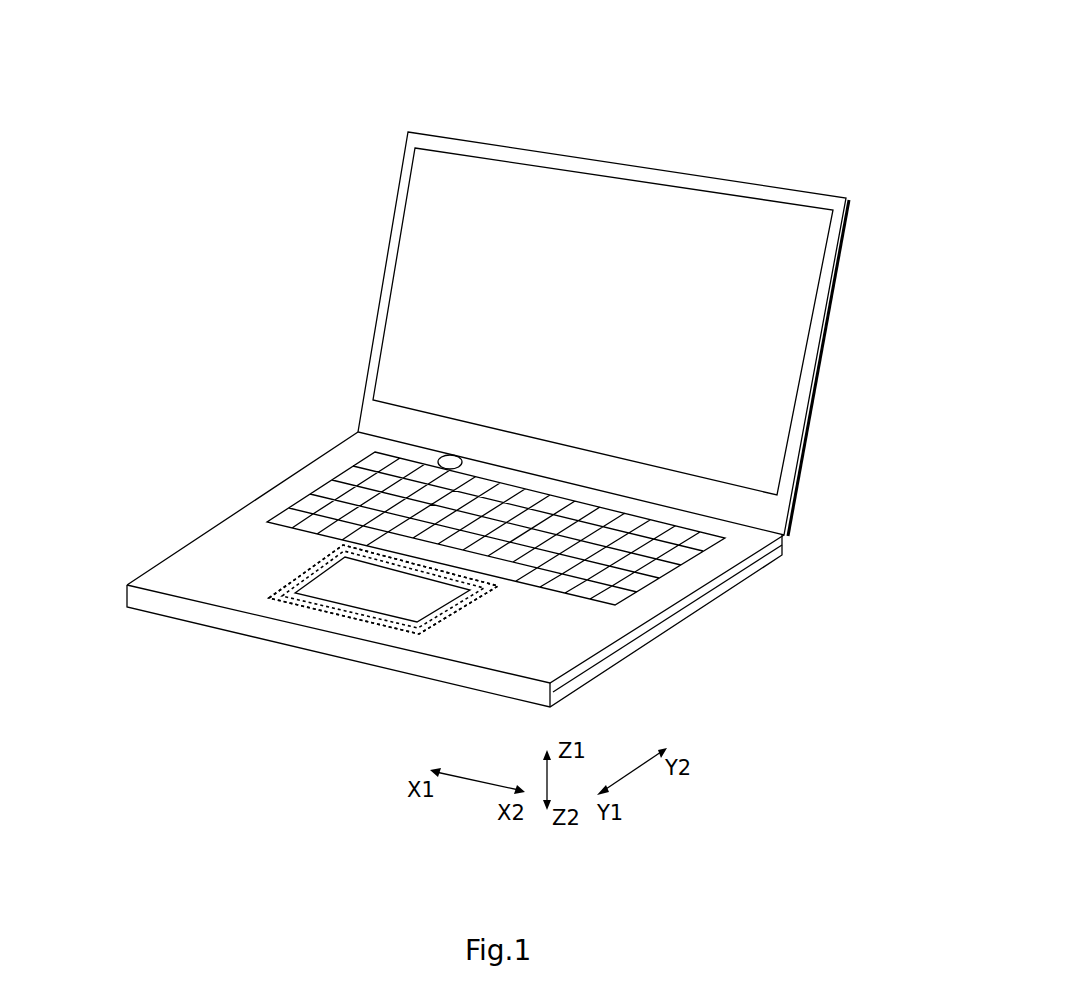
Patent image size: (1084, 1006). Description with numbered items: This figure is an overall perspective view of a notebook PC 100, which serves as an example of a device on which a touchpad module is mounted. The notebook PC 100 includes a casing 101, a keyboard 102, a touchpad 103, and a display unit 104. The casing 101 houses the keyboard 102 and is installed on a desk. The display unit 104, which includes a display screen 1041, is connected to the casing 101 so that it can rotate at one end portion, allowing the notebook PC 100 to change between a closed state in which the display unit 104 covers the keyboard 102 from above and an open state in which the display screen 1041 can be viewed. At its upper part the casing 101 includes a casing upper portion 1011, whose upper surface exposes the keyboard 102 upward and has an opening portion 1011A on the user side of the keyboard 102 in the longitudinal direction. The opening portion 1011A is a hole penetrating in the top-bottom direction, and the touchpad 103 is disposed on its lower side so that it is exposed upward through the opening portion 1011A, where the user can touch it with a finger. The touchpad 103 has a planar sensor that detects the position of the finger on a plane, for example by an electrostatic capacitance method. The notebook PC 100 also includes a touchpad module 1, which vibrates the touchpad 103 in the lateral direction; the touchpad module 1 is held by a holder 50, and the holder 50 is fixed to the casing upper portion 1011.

The notebook PC 100 is at (738, 117).
The casing 101 is at (613, 668).
The casing upper portion 1011 is at (773, 547).
The opening portion 1011A is at (310, 568).
The keyboard 102 is at (693, 558).
The touchpad 103 is at (427, 602).
The display unit 104 is at (827, 192).
The display screen 1041 is at (412, 170).
The touchpad module 1 is at (302, 600).
The holder 50 is at (407, 636).